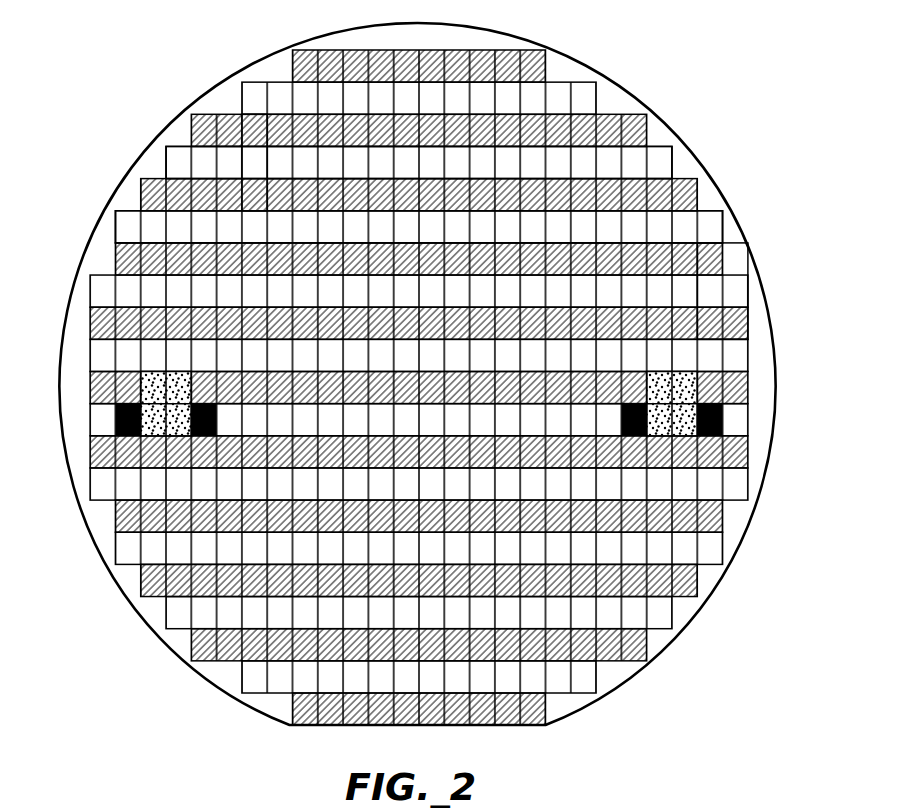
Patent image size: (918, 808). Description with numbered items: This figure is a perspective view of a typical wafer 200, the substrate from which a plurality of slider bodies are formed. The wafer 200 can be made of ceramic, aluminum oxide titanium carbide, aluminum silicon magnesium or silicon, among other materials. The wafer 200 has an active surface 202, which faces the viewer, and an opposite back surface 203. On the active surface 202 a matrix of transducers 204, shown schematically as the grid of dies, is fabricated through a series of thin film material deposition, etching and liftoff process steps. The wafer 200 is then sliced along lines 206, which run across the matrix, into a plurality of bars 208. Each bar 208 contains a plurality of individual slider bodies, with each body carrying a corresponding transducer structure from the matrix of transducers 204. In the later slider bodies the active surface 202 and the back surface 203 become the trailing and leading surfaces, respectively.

The wafer 200 is at (438, 374).
The active surface 202 is at (438, 387).
The back surface 203 is at (653, 112).
The transducers 204 is at (748, 320).
The lines 206 is at (150, 175).
The bars 208 is at (245, 198).